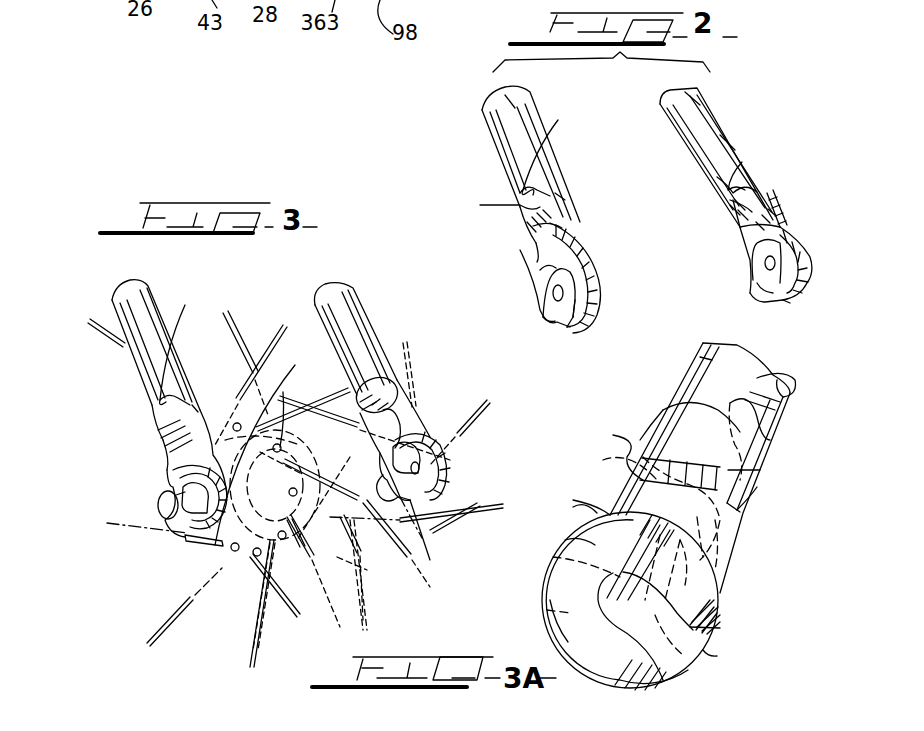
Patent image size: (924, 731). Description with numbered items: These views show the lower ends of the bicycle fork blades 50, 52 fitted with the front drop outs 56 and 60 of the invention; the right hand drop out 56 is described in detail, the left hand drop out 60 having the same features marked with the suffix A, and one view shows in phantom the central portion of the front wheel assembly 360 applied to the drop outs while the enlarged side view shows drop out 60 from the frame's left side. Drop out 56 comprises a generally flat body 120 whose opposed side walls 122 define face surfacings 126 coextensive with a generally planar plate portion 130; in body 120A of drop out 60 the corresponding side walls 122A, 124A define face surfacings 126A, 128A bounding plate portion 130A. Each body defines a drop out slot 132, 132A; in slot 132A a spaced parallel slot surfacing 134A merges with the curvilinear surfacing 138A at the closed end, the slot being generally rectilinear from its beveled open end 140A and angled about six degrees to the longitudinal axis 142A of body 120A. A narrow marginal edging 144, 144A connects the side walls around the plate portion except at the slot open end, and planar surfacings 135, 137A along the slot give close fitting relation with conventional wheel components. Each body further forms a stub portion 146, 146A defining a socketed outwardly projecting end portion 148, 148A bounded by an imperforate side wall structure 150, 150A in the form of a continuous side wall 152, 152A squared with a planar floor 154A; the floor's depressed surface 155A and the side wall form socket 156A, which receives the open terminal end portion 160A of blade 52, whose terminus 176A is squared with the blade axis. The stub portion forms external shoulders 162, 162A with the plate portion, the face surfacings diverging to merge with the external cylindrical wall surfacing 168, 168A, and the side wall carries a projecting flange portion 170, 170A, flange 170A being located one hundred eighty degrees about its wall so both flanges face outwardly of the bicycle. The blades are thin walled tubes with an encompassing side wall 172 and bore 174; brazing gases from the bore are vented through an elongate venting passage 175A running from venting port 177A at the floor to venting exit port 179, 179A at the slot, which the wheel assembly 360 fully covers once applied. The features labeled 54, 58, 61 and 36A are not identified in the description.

In FIG. 2, the fork blade 50 is at (520, 103).
In FIG. 3, the fork blade 50 is at (140, 298).
In FIG. 2, the fork blade 52 is at (717, 107).
In FIG. 3, the fork blade 52 is at (340, 300).
In FIG. 2, the lever tube 54 is at (503, 143).
In FIG. 2, the front drop out 56 is at (508, 258).
In FIG. 3, the front drop out 56 is at (155, 470).
In FIG. 2, the tube end 58 is at (722, 130).
In FIG. 3A, the tube end 58 is at (730, 360).
In FIG. 2, the front drop out 60 is at (733, 310).
In FIG. 3, the front drop out 60 is at (432, 412).
In FIG. 3A, the front drop out 60 is at (560, 530).
In FIG. 2, the pivot hole 61 is at (792, 308).
In FIG. 3, the pivot hole 61 is at (163, 592).
In FIG. 2, the body 120 is at (598, 328).
In FIG. 3, the body 120 is at (213, 552).
In FIG. 2, the body 120A is at (822, 247).
In FIG. 3, the body 120A is at (450, 480).
In FIG. 3A, the body 120A is at (550, 640).
In FIG. 2, the side wall 122 is at (560, 257).
In FIG. 2, the side wall 122A is at (745, 250).
In FIG. 3A, the side wall 124A is at (727, 553).
In FIG. 2, the face surfacing 126 is at (556, 236).
In FIG. 2, the face surfacing 126A is at (752, 258).
In FIG. 3A, the face surfacing 128A is at (727, 530).
In FIG. 2, the plate portion 130 is at (530, 260).
In FIG. 2, the plate portion 130A is at (775, 215).
In FIG. 3A, the plate portion 130A is at (620, 497).
In FIG. 2, the drop out slot 132 is at (556, 338).
In FIG. 3, the drop out slot 132 is at (183, 535).
In FIG. 3, the drop out slot 132A is at (393, 500).
In FIG. 3A, the drop out slot 132A is at (700, 660).
In FIG. 3A, the slot surfacing 134A is at (720, 628).
In FIG. 2, the planar surfacing 135 is at (540, 313).
In FIG. 2, the planar surfacing 137A is at (750, 295).
In FIG. 3A, the planar surfacing 137A is at (548, 625).
In FIG. 3A, the curvilinear surfacing 138A is at (610, 583).
In FIG. 3A, the slot open end 140A is at (717, 656).
In FIG. 3A, the longitudinal axis 142A is at (778, 404).
In FIG. 2, the marginal edging 144 is at (603, 290).
In FIG. 3, the marginal edging 144 is at (286, 406).
In FIG. 2, the marginal edging 144A is at (807, 263).
In FIG. 3, the marginal edging 144A is at (440, 455).
In FIG. 3A, the marginal edging 144A is at (590, 517).
In FIG. 2, the stub portion 146 is at (528, 256).
In FIG. 3, the stub portion 146 is at (150, 440).
In FIG. 2, the stub portion 146A is at (730, 227).
In FIG. 3, the stub portion 146A is at (358, 392).
In FIG. 3A, the stub portion 146A is at (765, 505).
In FIG. 2, the end portion 148 is at (512, 230).
In FIG. 3, the end portion 148 is at (145, 425).
In FIG. 2, the end portion 148A is at (760, 182).
In FIG. 3, the end portion 148A is at (386, 380).
In FIG. 3A, the end portion 148A is at (695, 402).
In FIG. 2, the side wall structure 150 is at (565, 200).
In FIG. 2, the side wall structure 150A is at (730, 200).
In FIG. 3A, the side wall structure 150A is at (757, 487).
In FIG. 2, the side wall 152 is at (550, 196).
In FIG. 3, the side wall 152 is at (190, 405).
In FIG. 2, the side wall 152A is at (717, 177).
In FIG. 3, the side wall 152A is at (375, 397).
In FIG. 3A, the floor 154A is at (770, 448).
In FIG. 3A, the depressed surface 155A is at (733, 615).
In FIG. 3A, the socket 156A is at (682, 405).
In FIG. 3A, the terminal end portion 160A is at (627, 463).
In FIG. 3, the external shoulder 162 is at (198, 412).
In FIG. 2, the external shoulder 162A is at (740, 227).
In FIG. 3, the external shoulder 162A is at (403, 418).
In FIG. 3A, the external shoulder 162A is at (617, 445).
In FIG. 2, the external cylindrical wall surfacing 168 is at (492, 204).
In FIG. 2, the external cylindrical wall surfacing 168A is at (742, 162).
In FIG. 2, the projecting flange portion 170 is at (558, 120).
In FIG. 3, the projecting flange portion 170 is at (186, 344).
In FIG. 3A, the projecting flange portion 170A is at (762, 428).
In FIG. 2, the side wall 172 is at (705, 100).
In FIG. 3A, the side wall 172 is at (700, 357).
In FIG. 3A, the bore 174 is at (783, 386).
In FIG. 3A, the venting passage 175A is at (653, 540).
In FIG. 3A, the terminus 176A is at (733, 578).
In FIG. 3A, the venting port 177A is at (760, 470).
In FIG. 3, the venting exit port 179 is at (175, 500).
In FIG. 3, the venting exit port 179A is at (400, 497).
In FIG. 3A, the venting exit port 179A is at (553, 557).
In FIG. 3, the front wheel assembly 360 is at (425, 567).
In FIG. 3A, the cut end 36A is at (663, 680).